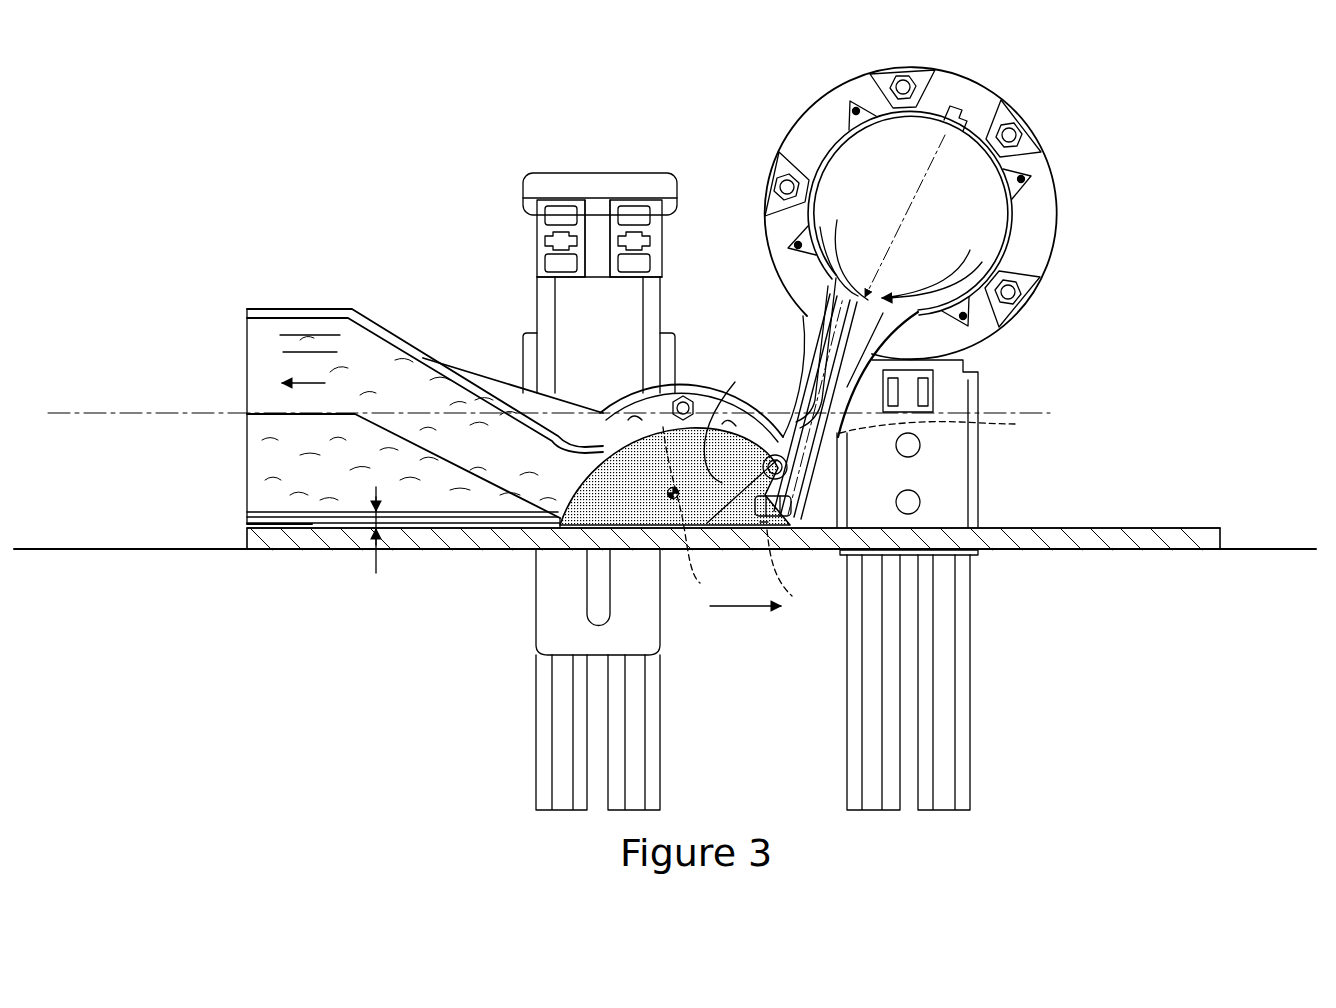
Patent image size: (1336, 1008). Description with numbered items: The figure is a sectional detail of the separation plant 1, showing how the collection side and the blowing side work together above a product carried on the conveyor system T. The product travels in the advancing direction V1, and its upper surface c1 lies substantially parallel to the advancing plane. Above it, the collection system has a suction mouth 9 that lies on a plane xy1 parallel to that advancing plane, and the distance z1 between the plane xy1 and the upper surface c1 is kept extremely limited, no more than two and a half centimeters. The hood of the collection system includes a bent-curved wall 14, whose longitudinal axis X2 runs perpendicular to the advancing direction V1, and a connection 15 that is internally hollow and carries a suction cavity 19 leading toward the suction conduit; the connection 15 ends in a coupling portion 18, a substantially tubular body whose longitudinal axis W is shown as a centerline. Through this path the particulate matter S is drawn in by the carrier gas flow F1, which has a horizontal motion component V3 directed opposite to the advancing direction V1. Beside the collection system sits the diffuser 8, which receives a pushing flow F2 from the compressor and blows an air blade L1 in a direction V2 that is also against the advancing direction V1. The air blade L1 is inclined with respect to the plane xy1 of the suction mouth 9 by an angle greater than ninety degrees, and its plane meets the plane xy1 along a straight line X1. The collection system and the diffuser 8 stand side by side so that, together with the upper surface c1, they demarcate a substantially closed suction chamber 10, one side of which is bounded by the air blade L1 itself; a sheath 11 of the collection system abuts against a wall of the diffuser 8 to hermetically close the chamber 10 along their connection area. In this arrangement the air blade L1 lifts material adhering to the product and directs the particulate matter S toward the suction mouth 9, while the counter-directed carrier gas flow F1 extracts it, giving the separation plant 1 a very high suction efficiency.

The separation plant 1 is at (523, 130).
The diffuser 8 is at (1062, 172).
The suction mouth 9 is at (627, 532).
The suction chamber 10 is at (663, 425).
The sheath 11 is at (775, 530).
The wall 14 is at (598, 405).
The connection 15 is at (462, 366).
The coupling portion 18 is at (283, 307).
The suction cavity 19 is at (277, 505).
The carrier gas flow F1 is at (313, 336).
The pushing flow F2 is at (975, 272).
The advancing direction V1 is at (745, 620).
The air blade direction V2 is at (788, 400).
The horizontal motion component V3 is at (318, 368).
The longitudinal axis W is at (155, 412).
The particulate matter S is at (342, 524).
The distance z1 is at (378, 562).
The plane xy1 is at (568, 530).
The straight line X1 is at (794, 571).
The longitudinal axis X2 is at (694, 512).
The air blade L1 is at (944, 425).
The upper surface c1 is at (1136, 526).
The conveyor system T is at (1262, 549).